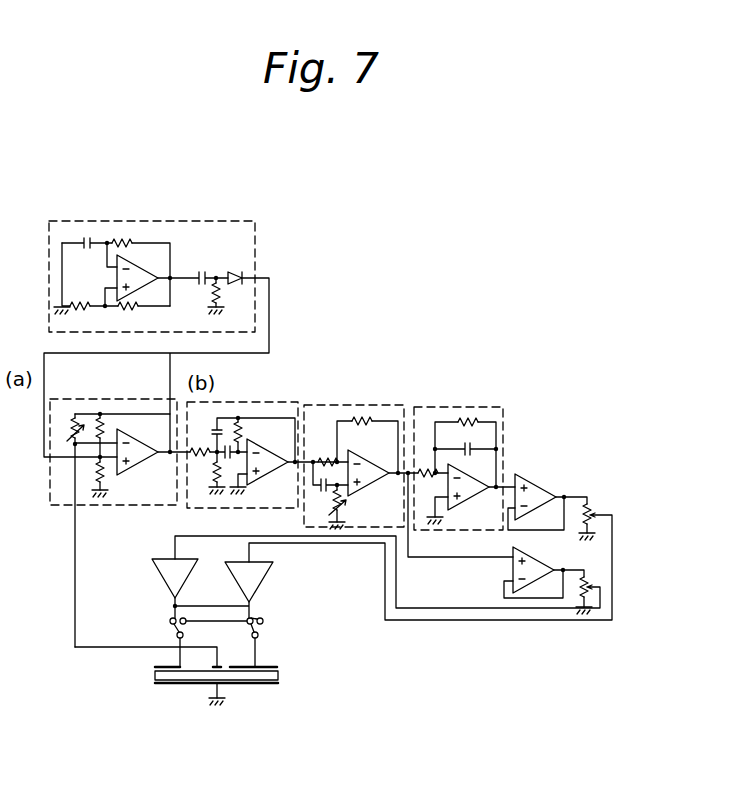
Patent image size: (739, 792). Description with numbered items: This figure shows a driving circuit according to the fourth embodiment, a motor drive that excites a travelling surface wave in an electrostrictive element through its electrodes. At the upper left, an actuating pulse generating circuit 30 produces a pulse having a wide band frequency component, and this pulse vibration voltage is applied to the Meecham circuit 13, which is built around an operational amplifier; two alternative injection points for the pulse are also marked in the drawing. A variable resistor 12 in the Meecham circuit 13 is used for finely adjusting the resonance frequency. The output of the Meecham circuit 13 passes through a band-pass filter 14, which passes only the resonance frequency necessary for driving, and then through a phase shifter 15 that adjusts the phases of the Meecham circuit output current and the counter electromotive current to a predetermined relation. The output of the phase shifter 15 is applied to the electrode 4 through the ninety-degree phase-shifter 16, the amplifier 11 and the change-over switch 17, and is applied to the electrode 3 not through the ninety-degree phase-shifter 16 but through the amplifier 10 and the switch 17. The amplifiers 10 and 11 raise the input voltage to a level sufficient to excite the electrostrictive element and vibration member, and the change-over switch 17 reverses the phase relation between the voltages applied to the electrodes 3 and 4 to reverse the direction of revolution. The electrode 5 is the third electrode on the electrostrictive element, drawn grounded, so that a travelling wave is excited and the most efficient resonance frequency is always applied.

The actuating pulse generating circuit 30 is at (165, 219).
The variable resistor 12 is at (69, 437).
The Meecham circuit 13 is at (117, 398).
The band-pass filter 14 is at (260, 402).
The phase shifter 15 is at (362, 403).
The 90° phase-shifter 16 is at (453, 405).
The amplifier 10 is at (162, 582).
The amplifier 11 is at (263, 583).
The change-over switch 17 is at (188, 627).
The electrode 3 is at (167, 658).
The electrode 5 is at (224, 658).
The electrode 4 is at (253, 658).